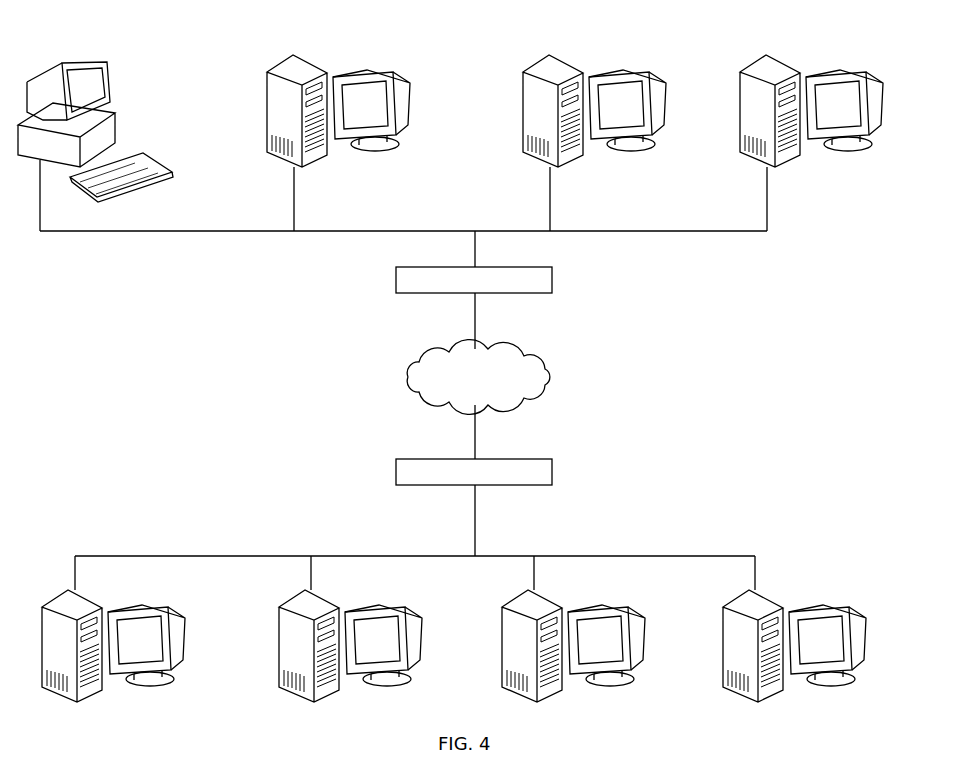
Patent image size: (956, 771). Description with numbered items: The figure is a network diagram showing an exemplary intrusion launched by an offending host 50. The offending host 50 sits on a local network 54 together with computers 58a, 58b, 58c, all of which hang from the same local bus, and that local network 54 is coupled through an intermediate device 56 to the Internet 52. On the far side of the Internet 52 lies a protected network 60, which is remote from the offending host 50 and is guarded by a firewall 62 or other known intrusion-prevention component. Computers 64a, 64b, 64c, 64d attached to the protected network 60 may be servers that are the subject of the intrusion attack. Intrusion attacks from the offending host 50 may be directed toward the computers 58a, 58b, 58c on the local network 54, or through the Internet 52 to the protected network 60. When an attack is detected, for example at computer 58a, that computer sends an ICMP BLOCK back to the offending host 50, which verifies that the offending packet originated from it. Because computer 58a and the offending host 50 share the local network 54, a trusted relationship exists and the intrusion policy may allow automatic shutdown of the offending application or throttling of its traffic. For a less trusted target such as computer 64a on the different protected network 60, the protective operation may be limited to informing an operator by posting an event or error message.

The offending host 50 is at (45, 70).
The Internet 52 is at (549, 383).
The local network 54 is at (697, 231).
The router/gateway 56 is at (396, 281).
The computer 58a is at (275, 65).
The computer 58b is at (533, 65).
The computer 58c is at (757, 66).
The protected network 60 is at (683, 556).
The firewall 62 is at (396, 474).
The computer 64a is at (88, 695).
The computer 64b is at (325, 697).
The computer 64c is at (548, 697).
The computer 64d is at (773, 695).